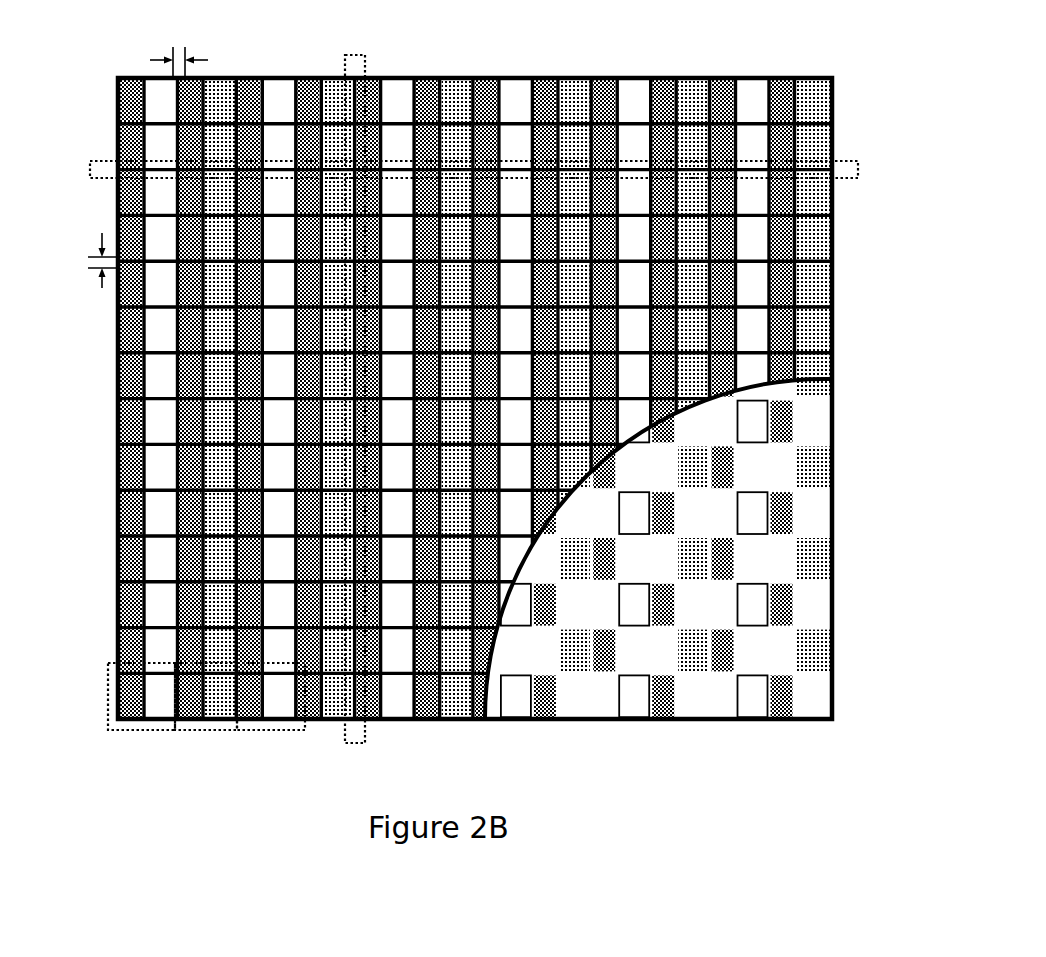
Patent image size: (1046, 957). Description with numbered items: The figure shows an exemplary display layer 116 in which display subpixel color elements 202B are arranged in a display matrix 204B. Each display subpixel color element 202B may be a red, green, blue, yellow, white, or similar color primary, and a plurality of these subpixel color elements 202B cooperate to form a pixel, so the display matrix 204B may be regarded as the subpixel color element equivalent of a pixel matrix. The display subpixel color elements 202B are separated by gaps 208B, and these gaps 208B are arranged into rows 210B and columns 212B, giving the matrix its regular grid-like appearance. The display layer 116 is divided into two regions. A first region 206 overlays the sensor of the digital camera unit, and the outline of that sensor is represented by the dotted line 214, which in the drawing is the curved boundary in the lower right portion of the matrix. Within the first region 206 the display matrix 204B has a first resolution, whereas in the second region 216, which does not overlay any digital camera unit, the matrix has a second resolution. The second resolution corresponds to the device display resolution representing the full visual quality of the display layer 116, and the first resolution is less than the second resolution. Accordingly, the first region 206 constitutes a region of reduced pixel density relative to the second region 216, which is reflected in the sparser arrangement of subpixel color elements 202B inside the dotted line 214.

The display layer 116 is at (500, 359).
The display matrix 204B is at (500, 359).
The second region 216 is at (663, 77).
The rows 210B is at (870, 150).
The columns 212B is at (378, 44).
The display subpixel color elements 202B is at (145, 731).
The gaps 208B is at (197, 34).
The dotted line 214 is at (483, 730).
The first region 206 is at (707, 708).